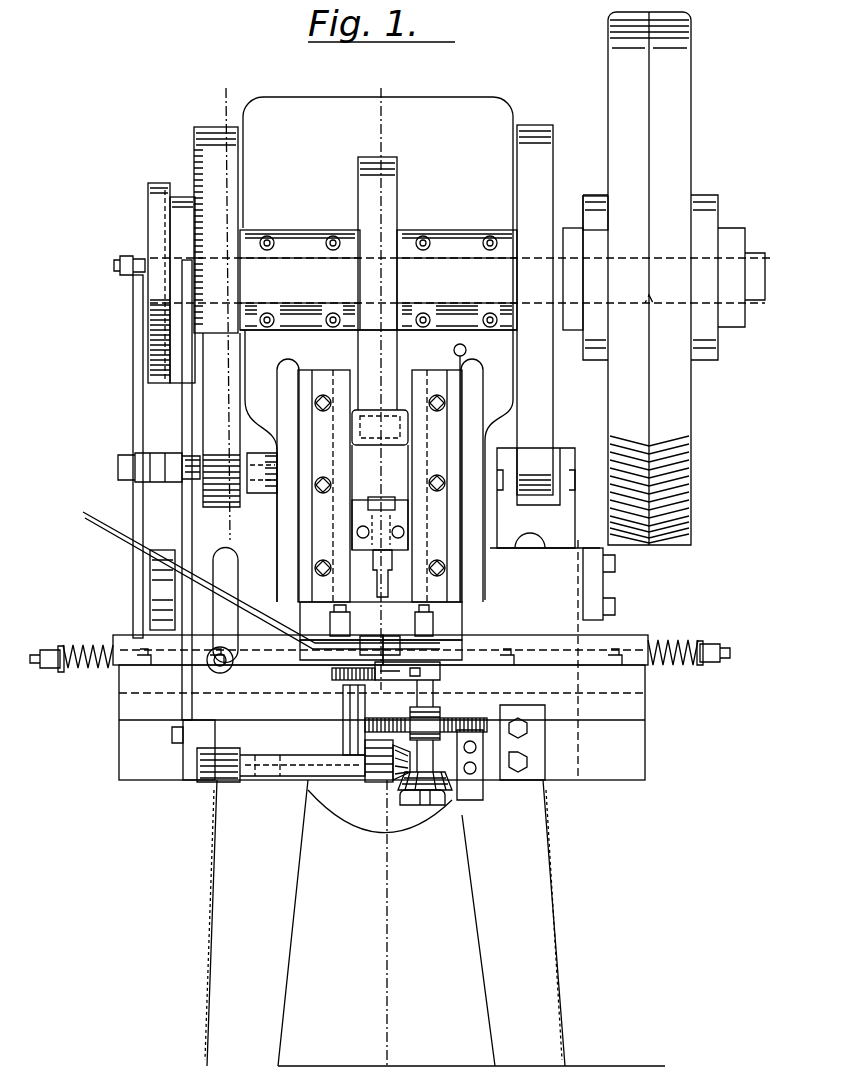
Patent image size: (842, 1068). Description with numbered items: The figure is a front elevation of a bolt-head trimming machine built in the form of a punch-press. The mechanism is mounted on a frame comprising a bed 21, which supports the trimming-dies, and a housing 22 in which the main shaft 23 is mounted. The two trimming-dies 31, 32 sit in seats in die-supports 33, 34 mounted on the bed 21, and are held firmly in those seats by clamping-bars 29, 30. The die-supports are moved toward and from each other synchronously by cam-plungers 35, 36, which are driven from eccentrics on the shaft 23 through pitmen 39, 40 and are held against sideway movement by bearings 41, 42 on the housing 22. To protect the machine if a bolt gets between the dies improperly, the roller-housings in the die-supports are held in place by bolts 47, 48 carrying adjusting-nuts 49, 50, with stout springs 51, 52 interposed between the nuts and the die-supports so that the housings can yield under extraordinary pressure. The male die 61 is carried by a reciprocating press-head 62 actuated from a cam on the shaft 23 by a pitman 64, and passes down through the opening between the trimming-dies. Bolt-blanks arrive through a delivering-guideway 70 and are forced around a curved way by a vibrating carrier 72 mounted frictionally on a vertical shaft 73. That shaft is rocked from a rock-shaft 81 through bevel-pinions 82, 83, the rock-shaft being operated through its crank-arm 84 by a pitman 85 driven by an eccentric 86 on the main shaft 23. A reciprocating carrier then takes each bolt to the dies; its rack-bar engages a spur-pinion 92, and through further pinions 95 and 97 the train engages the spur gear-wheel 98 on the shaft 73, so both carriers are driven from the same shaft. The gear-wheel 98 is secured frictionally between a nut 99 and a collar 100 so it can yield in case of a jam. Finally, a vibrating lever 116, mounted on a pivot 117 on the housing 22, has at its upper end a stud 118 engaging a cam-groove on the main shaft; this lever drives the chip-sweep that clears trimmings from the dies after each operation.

The bed 21 is at (140, 745).
The housing 22 is at (455, 135).
The main shaft 23 is at (752, 295).
The clamping-bar 29 is at (432, 628).
The clamping-bar 30 is at (330, 620).
The trimming-die 31 is at (403, 642).
The trimming-die 32 is at (368, 636).
The die-support 33 is at (640, 636).
The die-support 34 is at (122, 637).
The cam-plunger 35 is at (555, 548).
The cam-plunger 36 is at (205, 523).
The pitman 39 is at (540, 166).
The pitman 40 is at (212, 145).
The bearing 41 is at (598, 590).
The bearing 42 is at (165, 585).
The bolt 47 is at (715, 644).
The bolt 48 is at (47, 650).
The adjusting-nut 49 is at (712, 665).
The adjusting-nut 50 is at (58, 672).
The spring 51 is at (680, 668).
The spring 52 is at (88, 672).
The male die 61 is at (376, 580).
The press-head 62 is at (380, 497).
The pitman 64 is at (390, 215).
The delivering-guideway 70 is at (98, 530).
The vibrating carrier 72 is at (340, 682).
The vertical shaft 73 is at (483, 785).
The rock-shaft 81 is at (292, 780).
The bevel-pinion 82 is at (402, 782).
The bevel-pinion 83 is at (415, 805).
The crank-arm 84 is at (198, 748).
The pitman 85 is at (182, 440).
The eccentric 86 is at (180, 228).
The spur-pinion 92 is at (340, 668).
The pinion 95 is at (343, 730).
The pinion 97 is at (345, 785).
The spur gear-wheel 98 is at (480, 805).
The nut 99 is at (440, 712).
The collar 100 is at (432, 805).
The vibrating lever 116 is at (134, 368).
The pivot 117 is at (118, 468).
The stud 118 is at (120, 262).